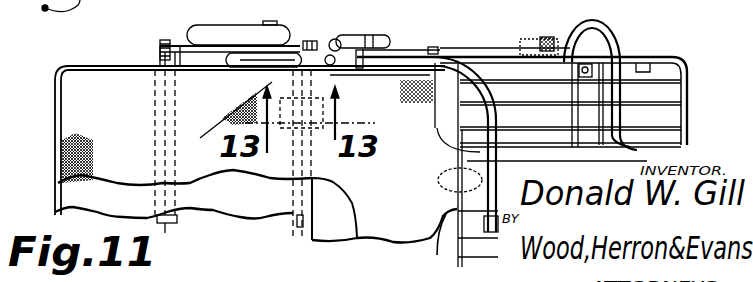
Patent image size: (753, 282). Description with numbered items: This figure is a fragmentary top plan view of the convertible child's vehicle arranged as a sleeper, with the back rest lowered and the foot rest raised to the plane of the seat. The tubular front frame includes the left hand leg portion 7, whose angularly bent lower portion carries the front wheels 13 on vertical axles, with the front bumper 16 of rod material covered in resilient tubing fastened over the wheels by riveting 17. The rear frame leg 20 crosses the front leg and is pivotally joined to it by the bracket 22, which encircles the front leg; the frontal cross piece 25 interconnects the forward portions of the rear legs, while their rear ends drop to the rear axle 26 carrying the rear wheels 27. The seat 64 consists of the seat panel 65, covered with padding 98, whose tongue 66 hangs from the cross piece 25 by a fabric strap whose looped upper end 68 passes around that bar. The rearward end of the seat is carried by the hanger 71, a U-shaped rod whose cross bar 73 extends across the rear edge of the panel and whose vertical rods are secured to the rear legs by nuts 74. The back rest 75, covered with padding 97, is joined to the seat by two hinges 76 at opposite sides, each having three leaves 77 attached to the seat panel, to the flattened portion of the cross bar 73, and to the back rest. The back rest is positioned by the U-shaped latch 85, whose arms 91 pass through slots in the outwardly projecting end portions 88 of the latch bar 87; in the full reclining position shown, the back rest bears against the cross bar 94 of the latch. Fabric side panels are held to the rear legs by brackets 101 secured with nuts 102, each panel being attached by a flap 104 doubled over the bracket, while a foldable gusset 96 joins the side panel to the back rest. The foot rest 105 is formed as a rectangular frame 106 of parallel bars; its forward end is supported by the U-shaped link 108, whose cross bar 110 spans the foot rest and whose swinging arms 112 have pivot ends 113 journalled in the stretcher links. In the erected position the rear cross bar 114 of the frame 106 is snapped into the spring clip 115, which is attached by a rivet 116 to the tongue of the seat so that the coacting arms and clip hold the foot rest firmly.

The left hand leg portion 7 is at (489, 48).
The front wheel 13 is at (638, 67).
The front bumper 16 is at (621, 45).
The riveting 17 is at (558, 42).
The rear frame leg 20 is at (284, 53).
The bracket 22 is at (370, 35).
The frontal cross piece 25 is at (496, 135).
The rear axle 26 is at (233, 70).
The rear wheel 27 is at (199, 34).
The seat 64 is at (405, 222).
The seat panel 65 is at (334, 240).
The tongue 66 is at (442, 244).
The looped upper end 68 is at (496, 154).
The hanger 71 is at (331, 40).
The cross bar 73 is at (296, 226).
The nut 74 is at (312, 67).
The back rest 75 is at (61, 203).
The hinge 76 is at (319, 146).
The hinge leaf 77 is at (291, 155).
The U-shaped latch 85 is at (223, 45).
The latch bar 87 is at (160, 61).
The end portion 88 is at (165, 40).
The latch arm 91 is at (264, 22).
The cross bar of latch 94 is at (178, 230).
The foldable gusset 96 is at (201, 75).
The padding 97 is at (55, 150).
The padding 98 is at (362, 198).
The bracket 101 is at (360, 65).
The nut 102 is at (433, 46).
The flap 104 is at (400, 84).
The foot rest 105 is at (680, 58).
The rectangular frame 106 is at (687, 103).
The U-shaped link 108 is at (582, 48).
The cross bar 110 is at (572, 117).
The swinging arm 112 is at (575, 52).
The pivot end 113 is at (532, 38).
The cross bar of foot rest frame 114 is at (437, 128).
The spring clip 115 is at (452, 174).
The rivet 116 is at (458, 205).